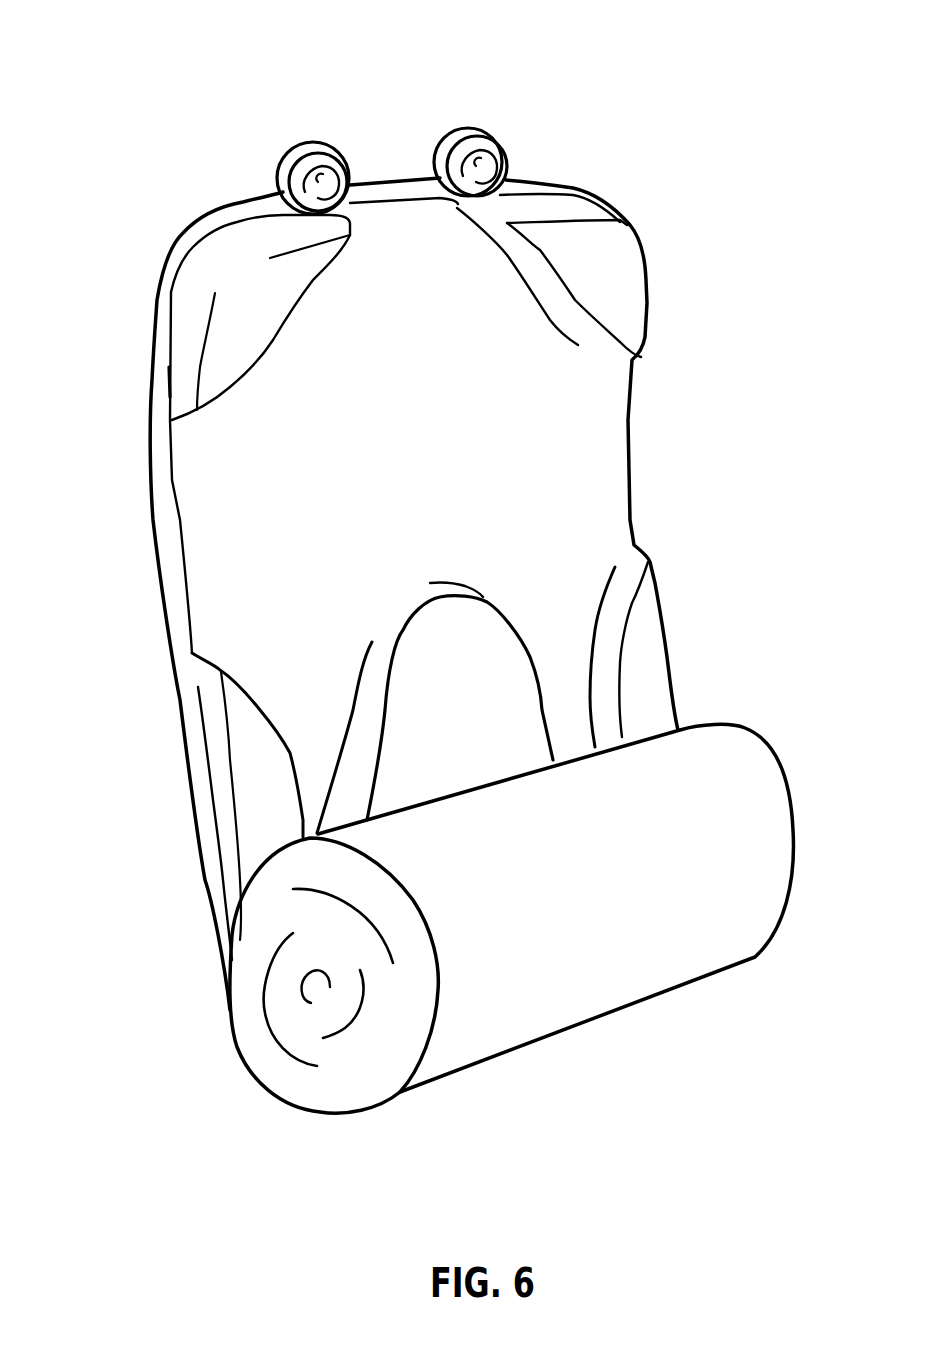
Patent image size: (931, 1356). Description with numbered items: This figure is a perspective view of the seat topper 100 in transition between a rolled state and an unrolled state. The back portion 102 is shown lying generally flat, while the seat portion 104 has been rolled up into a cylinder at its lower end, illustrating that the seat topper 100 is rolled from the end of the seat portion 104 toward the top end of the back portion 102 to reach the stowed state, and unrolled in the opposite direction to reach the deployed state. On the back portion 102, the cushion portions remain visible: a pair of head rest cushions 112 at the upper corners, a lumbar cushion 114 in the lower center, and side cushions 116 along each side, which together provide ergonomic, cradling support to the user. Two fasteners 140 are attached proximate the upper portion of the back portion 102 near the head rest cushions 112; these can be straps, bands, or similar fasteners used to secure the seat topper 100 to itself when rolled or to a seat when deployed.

The seat topper 100 is at (140, 50).
The back portion 102 is at (630, 430).
The seat portion 104 is at (787, 793).
The head rest cushions 112 is at (180, 292).
The lumbar cushion 114 is at (353, 672).
The side cushions 116 is at (208, 733).
The fasteners 140 is at (289, 155).